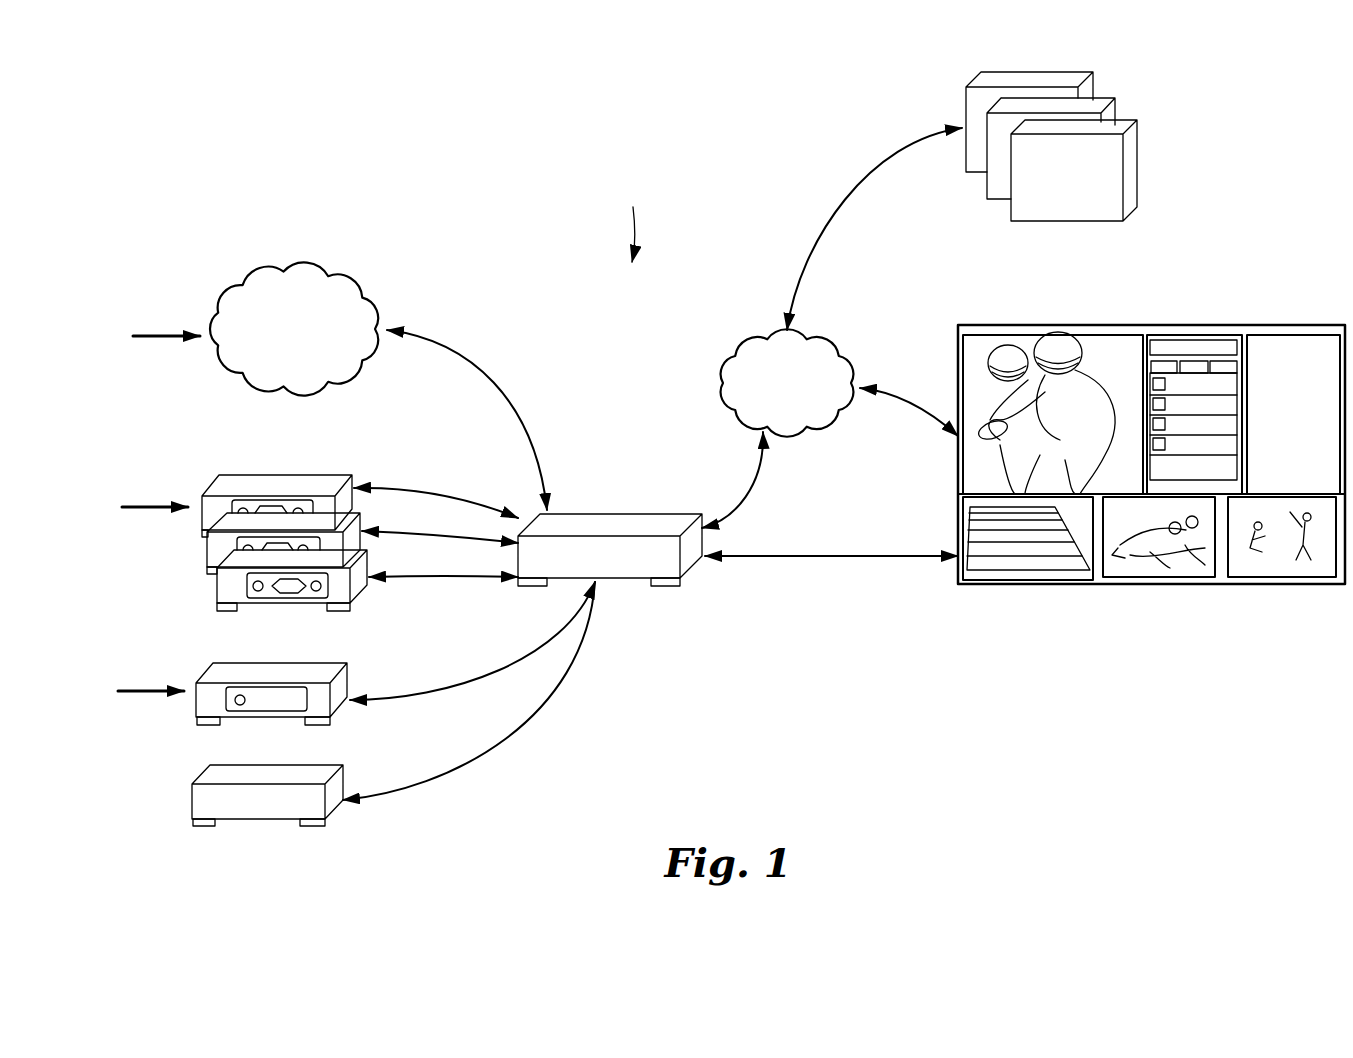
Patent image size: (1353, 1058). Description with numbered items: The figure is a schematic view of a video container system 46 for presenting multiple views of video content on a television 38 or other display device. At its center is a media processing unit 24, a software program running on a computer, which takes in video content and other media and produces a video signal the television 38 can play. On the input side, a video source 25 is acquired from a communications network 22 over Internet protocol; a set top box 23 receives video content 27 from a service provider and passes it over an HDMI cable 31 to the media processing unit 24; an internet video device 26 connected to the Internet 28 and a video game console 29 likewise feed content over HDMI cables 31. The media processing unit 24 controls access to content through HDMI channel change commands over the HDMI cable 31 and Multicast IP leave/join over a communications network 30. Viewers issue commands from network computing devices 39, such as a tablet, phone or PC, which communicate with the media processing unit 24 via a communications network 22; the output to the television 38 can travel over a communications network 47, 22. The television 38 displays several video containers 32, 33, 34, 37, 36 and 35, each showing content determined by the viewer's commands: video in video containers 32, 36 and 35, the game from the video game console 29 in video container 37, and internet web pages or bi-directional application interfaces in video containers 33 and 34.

The communications network 22 is at (531, 349).
The set top box 23 is at (337, 496).
The media processing unit 24 is at (605, 512).
The video source 25 is at (157, 340).
The internet video device 26 is at (347, 678).
The video content 27 is at (147, 512).
The Internet 28 is at (136, 695).
The video game console 29 is at (345, 775).
The communications network 30 is at (447, 345).
The HDMI cable 31 is at (453, 497).
The video container 32 is at (958, 383).
The video container 33 is at (1175, 335).
The video container 34 is at (1292, 335).
The video container 35 is at (1288, 568).
The video container 36 is at (1158, 568).
The video container 37 is at (1033, 570).
The television 38 is at (963, 582).
The network computing devices 39 is at (1093, 78).
The video container system 46 is at (629, 221).
The communications network 47 is at (751, 490).